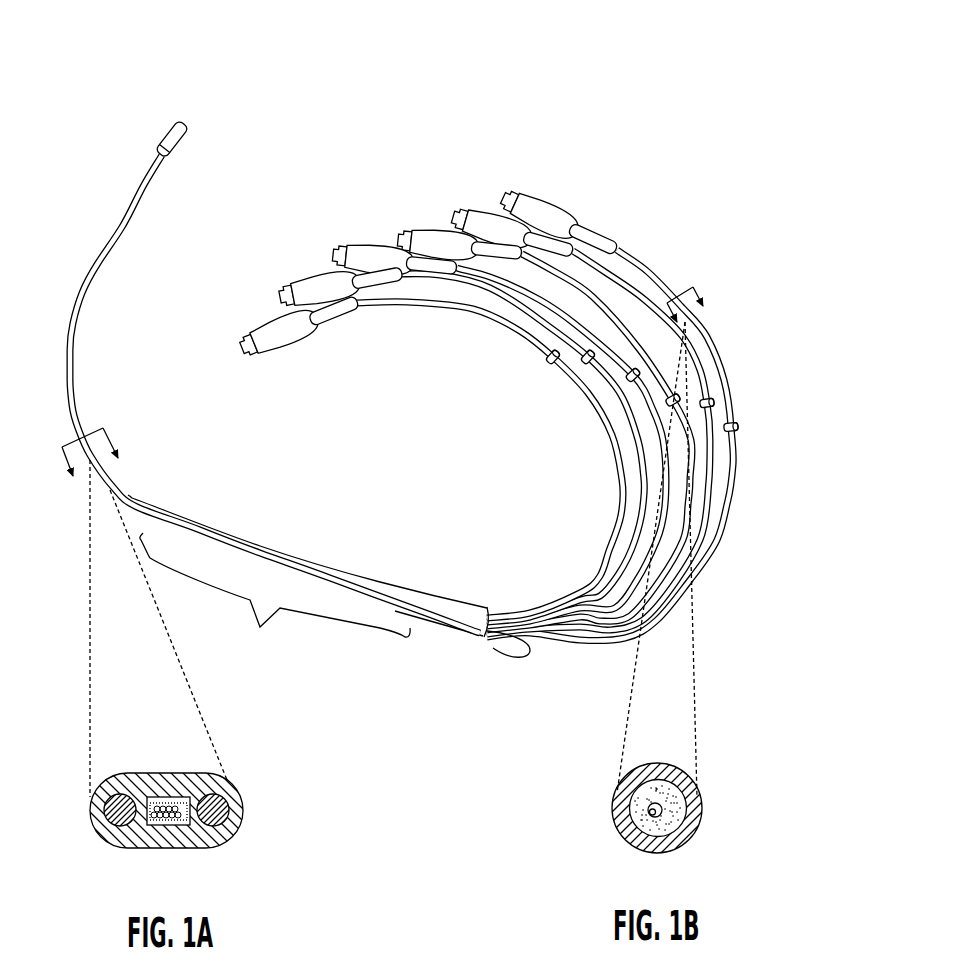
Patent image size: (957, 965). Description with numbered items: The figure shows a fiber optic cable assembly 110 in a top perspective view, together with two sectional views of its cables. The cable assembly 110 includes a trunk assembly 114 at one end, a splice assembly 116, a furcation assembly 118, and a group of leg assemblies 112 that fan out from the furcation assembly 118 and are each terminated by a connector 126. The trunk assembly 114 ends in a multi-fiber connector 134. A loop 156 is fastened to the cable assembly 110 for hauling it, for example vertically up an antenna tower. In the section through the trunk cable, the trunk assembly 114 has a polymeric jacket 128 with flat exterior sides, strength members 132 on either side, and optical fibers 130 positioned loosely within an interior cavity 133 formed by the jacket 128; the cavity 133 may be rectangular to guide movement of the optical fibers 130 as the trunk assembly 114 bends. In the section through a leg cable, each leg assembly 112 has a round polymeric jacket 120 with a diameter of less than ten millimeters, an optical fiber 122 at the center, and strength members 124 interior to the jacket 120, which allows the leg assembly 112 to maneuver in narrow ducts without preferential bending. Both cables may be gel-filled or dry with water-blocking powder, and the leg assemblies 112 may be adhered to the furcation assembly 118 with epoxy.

In FIG. 1, the fiber optic cable assembly 110 is at (652, 110).
In FIG. 1, the leg assemblies 112 is at (727, 380).
In FIG. 1B, the leg assemblies 112 is at (712, 789).
In FIG. 1, the trunk assembly 114 is at (67, 345).
In FIG. 1A, the trunk assembly 114 is at (82, 783).
In FIG. 1, the splice assembly 116 is at (307, 579).
In FIG. 1, the furcation assembly 118 is at (503, 597).
In FIG. 1B, the jacket 120 is at (617, 802).
In FIG. 1B, the optical fiber 122 is at (662, 810).
In FIG. 1B, the strength members 124 is at (668, 822).
In FIG. 1, the connector 126 is at (467, 205).
In FIG. 1A, the jacket 128 is at (220, 788).
In FIG. 1A, the optical fibers 130 is at (146, 824).
In FIG. 1A, the strength members 132 is at (220, 810).
In FIG. 1A, the interior cavity 133 is at (158, 806).
In FIG. 1, the multi-fiber connector 134 is at (183, 152).
In FIG. 1, the loop 156 is at (507, 660).